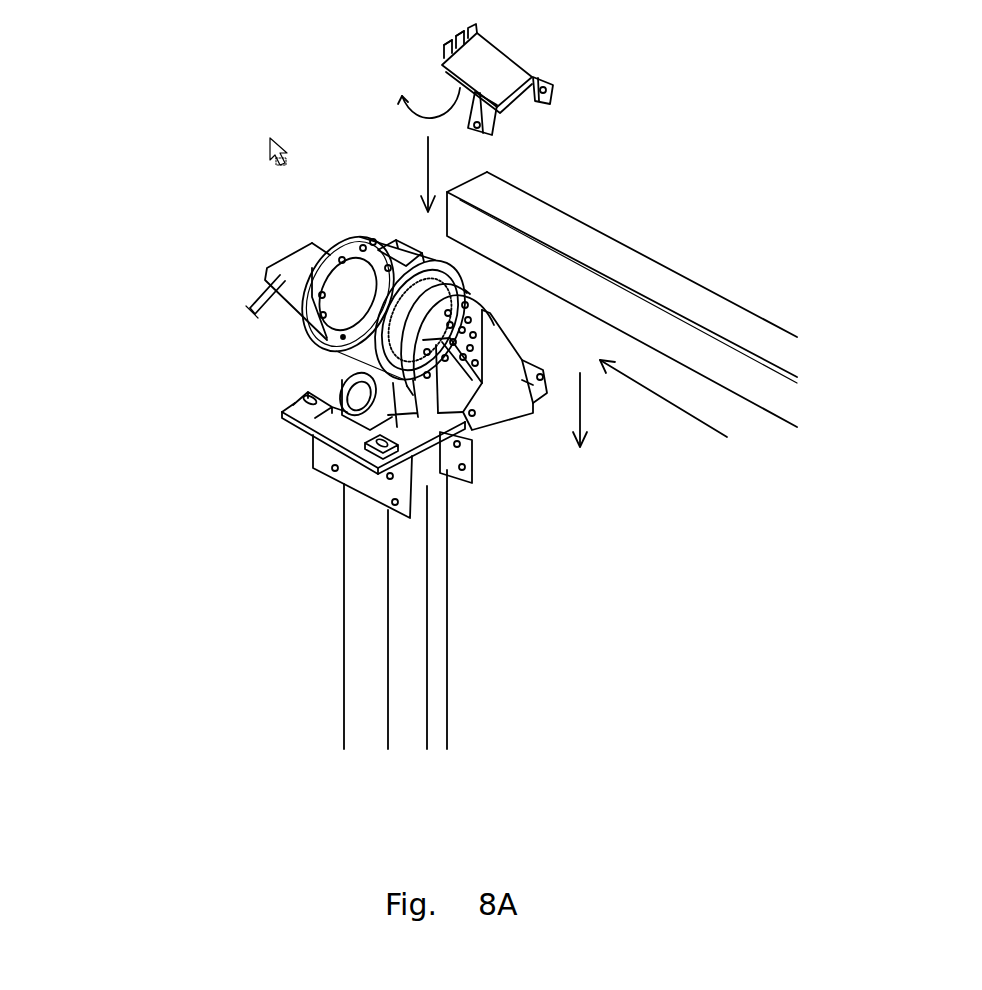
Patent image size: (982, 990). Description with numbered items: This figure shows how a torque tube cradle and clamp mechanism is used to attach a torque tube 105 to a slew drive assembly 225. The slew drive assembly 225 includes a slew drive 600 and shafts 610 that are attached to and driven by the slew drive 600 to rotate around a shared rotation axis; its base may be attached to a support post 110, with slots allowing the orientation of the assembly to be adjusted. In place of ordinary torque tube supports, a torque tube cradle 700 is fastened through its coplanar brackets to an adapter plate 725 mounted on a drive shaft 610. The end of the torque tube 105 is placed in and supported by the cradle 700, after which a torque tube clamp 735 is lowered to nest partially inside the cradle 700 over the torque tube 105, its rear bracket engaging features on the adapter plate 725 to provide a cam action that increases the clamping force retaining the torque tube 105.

The torque tube 105 is at (677, 288).
The support post 110 is at (337, 647).
The slew drive assembly 225 is at (230, 370).
The slew drive 600 is at (356, 288).
The shafts 610 is at (340, 360).
The torque tube cradle 700 is at (520, 440).
The adapter plate 725 is at (502, 300).
The torque tube clamp 735 is at (520, 48).